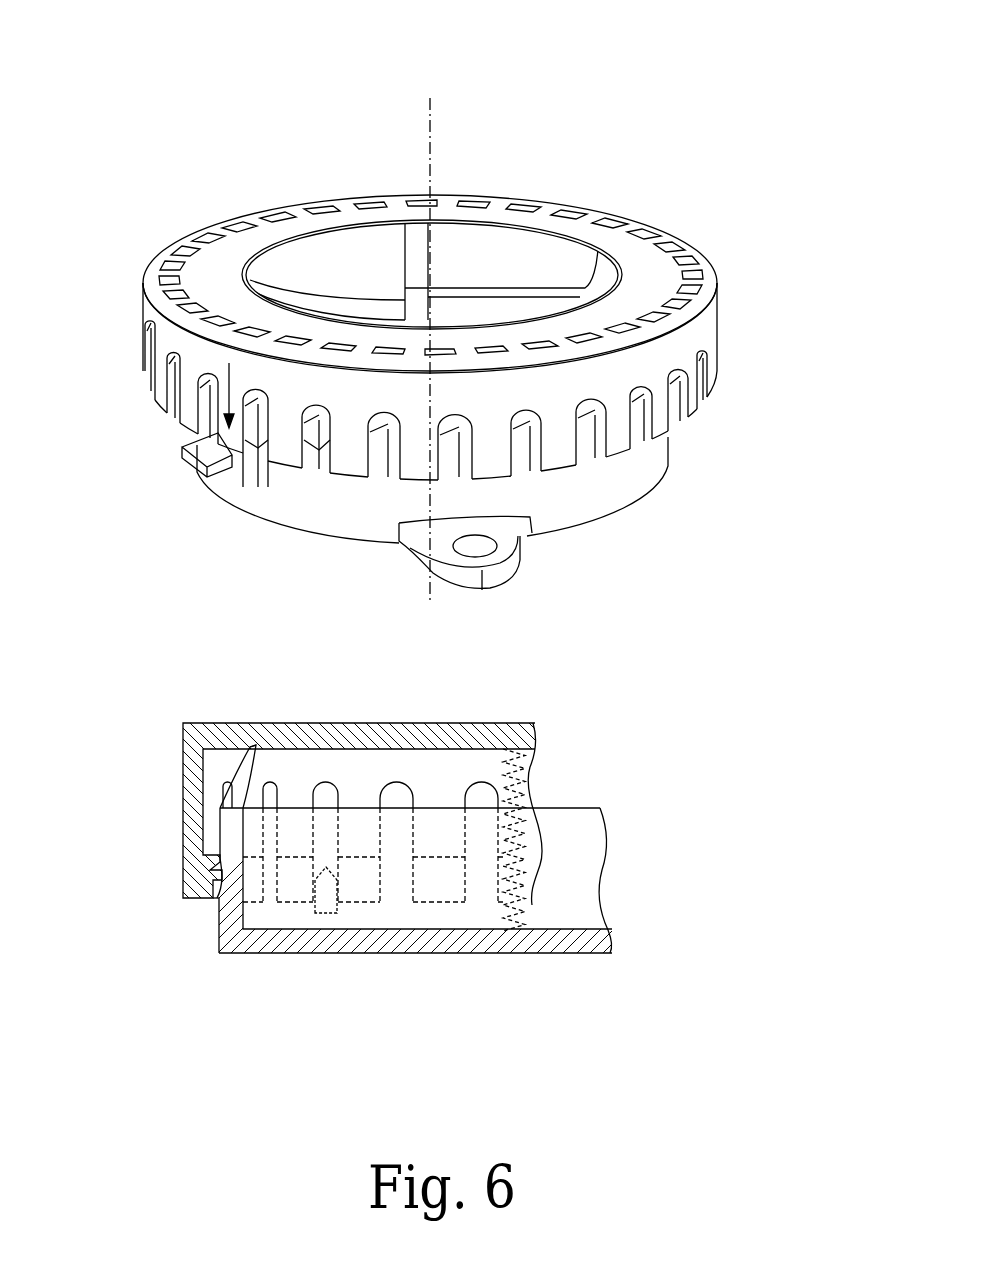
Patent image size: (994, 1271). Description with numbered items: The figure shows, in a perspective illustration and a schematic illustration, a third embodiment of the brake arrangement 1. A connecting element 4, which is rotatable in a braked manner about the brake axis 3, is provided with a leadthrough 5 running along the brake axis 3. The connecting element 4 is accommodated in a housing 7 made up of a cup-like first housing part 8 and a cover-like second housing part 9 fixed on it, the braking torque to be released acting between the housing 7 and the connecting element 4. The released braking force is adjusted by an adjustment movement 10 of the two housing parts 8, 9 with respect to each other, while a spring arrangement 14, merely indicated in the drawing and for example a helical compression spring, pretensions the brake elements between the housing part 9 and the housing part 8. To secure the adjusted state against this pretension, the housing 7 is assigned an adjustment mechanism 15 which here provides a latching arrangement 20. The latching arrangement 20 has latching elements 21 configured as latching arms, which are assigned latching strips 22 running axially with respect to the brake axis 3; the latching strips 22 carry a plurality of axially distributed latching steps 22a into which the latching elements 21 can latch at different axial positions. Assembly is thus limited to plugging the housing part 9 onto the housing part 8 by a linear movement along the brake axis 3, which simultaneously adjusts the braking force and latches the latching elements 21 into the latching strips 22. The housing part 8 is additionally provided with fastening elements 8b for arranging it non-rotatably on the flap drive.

The brake arrangement 1 is at (714, 109).
The brake axis 3 is at (432, 143).
The connecting element 4 is at (605, 268).
The leadthrough 5 is at (490, 268).
The housing 7 is at (736, 392).
The first housing part 8 is at (615, 485).
The fastening elements 8b is at (503, 575).
The second housing part 9 is at (677, 342).
The adjustment movement 10 is at (220, 378).
The spring arrangement 14 is at (527, 790).
The adjustment mechanism 15 is at (280, 452).
The latching arrangement 20 is at (205, 919).
The latching elements 21 is at (231, 486).
The latching strips 22 is at (323, 423).
The latching steps 22a is at (233, 820).